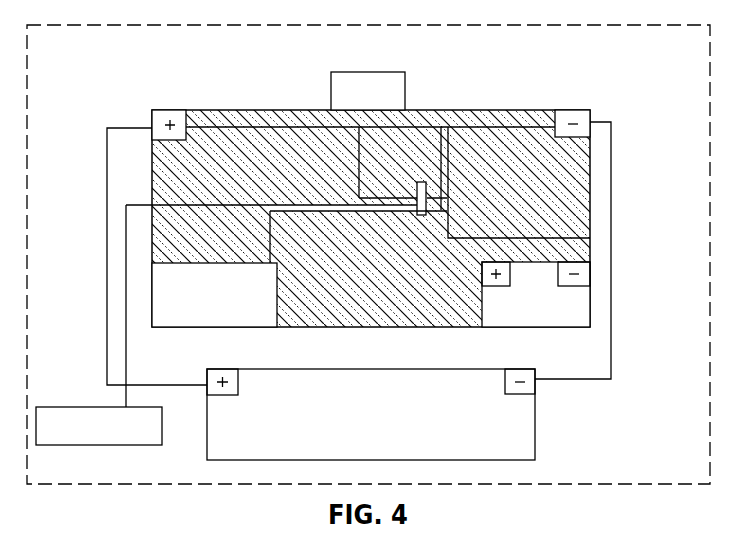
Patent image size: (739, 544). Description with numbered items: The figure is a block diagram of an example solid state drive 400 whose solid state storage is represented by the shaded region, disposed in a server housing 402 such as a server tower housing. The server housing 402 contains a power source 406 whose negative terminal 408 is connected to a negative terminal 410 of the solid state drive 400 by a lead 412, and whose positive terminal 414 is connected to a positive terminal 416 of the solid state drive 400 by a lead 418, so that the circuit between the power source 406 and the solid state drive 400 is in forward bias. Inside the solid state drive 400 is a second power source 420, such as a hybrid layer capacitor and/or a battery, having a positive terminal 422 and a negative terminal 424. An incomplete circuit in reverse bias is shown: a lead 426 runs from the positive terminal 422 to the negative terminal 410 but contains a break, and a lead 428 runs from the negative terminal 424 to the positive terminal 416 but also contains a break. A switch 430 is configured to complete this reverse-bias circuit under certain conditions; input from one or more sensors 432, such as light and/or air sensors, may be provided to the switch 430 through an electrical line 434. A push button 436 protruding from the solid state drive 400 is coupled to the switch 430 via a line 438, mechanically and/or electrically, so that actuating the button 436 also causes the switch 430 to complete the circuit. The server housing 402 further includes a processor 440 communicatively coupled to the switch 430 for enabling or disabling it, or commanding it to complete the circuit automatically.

The solid state drive 400 is at (290, 108).
The server housing 402 is at (704, 49).
The power source 406 is at (530, 457).
The negative terminal 408 is at (527, 369).
The negative terminal 410 is at (576, 109).
The lead 412 is at (611, 172).
The positive terminal 414 is at (222, 369).
The positive terminal 416 is at (152, 117).
The lead 418 is at (107, 166).
The power source 420 is at (587, 324).
The positive terminal 422 is at (490, 260).
The negative terminal 424 is at (592, 266).
The lead 426 is at (476, 128).
The lead 428 is at (552, 222).
The switch 430 is at (416, 184).
The sensors 432 is at (273, 326).
The electrical line 434 is at (290, 214).
The push button 436 is at (405, 80).
The line 438 is at (348, 143).
The processor 440 is at (135, 445).